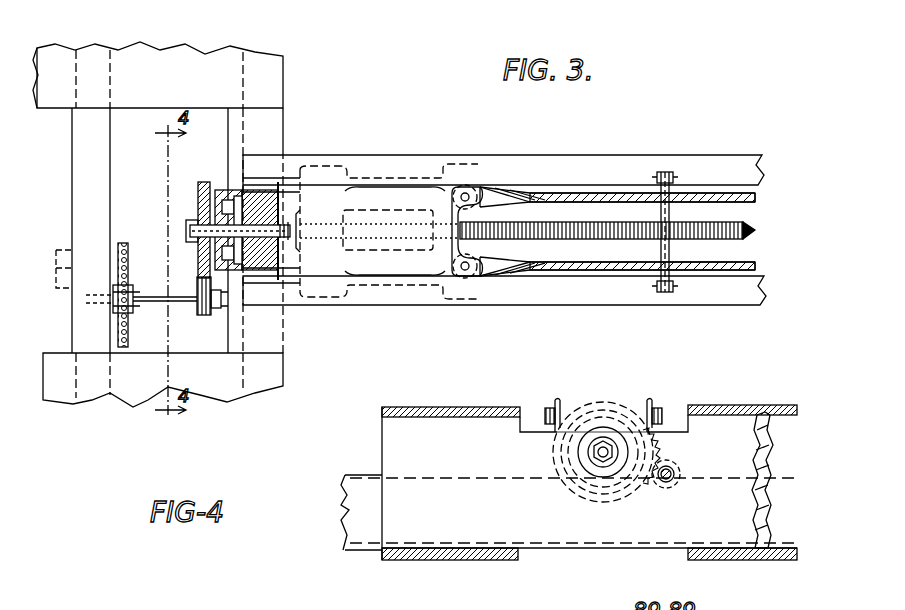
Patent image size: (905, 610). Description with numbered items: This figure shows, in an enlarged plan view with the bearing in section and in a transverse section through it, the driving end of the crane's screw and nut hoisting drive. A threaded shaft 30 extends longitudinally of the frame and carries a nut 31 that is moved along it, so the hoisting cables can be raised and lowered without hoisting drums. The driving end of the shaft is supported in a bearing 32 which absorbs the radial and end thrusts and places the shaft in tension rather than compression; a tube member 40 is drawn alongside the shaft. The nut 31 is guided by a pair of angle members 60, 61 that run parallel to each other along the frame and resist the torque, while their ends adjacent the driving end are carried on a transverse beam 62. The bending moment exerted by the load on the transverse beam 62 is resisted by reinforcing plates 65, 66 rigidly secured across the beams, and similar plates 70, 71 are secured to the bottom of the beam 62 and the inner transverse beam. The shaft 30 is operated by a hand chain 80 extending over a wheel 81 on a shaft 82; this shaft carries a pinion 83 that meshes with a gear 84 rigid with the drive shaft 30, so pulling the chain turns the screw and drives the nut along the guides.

In FIG. 3, the threaded shaft 30 is at (753, 230).
In FIG. 4, the threaded shaft 30 is at (603, 455).
In FIG. 3, the nut 31 is at (397, 170).
In FIG. 3, the bearing 32 is at (268, 192).
In FIG. 4, the bearing 32 is at (665, 440).
In FIG. 3, the tube member 40 is at (590, 190).
In FIG. 3, the angle member 60 is at (540, 145).
In FIG. 4, the angle member 60 is at (560, 404).
In FIG. 3, the angle member 61 is at (506, 306).
In FIG. 4, the angle member 61 is at (650, 404).
In FIG. 3, the transverse beam 62 is at (235, 392).
In FIG. 4, the transverse beam 62 is at (343, 514).
In FIG. 3, the reinforcing plate 65 is at (280, 78).
In FIG. 4, the reinforcing plate 65 is at (460, 407).
In FIG. 3, the reinforcing plate 66 is at (275, 373).
In FIG. 4, the reinforcing plate 66 is at (752, 410).
In FIG. 4, the plate 70 is at (476, 560).
In FIG. 4, the plate 71 is at (740, 560).
In FIG. 3, the hand chain 80 is at (123, 243).
In FIG. 3, the wheel 81 is at (128, 284).
In FIG. 3, the shaft 82 is at (158, 301).
In FIG. 4, the shaft 82 is at (675, 483).
In FIG. 3, the pinion 83 is at (203, 316).
In FIG. 4, the pinion 83 is at (680, 462).
In FIG. 3, the gear 84 is at (200, 182).
In FIG. 4, the gear 84 is at (632, 490).